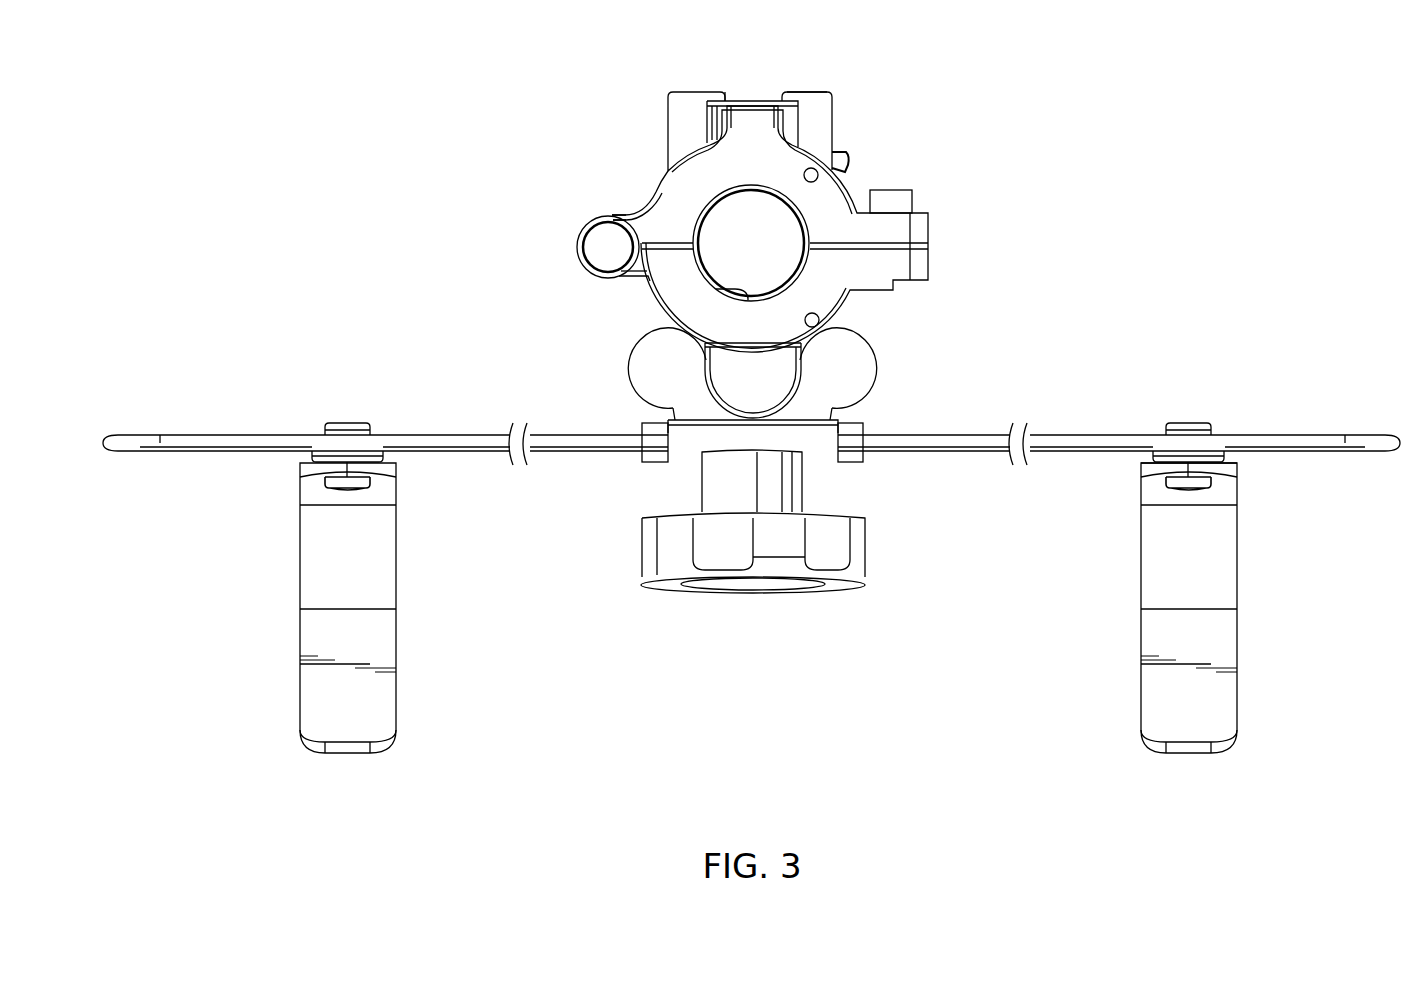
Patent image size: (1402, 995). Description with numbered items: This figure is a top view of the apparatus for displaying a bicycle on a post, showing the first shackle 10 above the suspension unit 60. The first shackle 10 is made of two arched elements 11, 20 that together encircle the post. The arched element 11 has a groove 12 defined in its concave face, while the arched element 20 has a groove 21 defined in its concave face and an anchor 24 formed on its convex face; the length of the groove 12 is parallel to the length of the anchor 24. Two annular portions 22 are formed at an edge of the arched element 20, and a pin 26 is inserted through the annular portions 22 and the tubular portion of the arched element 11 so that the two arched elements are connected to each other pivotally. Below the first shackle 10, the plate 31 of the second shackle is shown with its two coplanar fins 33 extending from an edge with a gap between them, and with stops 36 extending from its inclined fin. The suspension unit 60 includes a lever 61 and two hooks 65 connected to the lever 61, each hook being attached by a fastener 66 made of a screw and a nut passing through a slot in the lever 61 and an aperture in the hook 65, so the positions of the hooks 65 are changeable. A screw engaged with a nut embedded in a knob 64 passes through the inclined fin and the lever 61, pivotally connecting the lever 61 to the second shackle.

The first shackle 10 is at (870, 112).
The arched element 11 is at (873, 270).
The groove 12 is at (723, 289).
The arched element 20 is at (835, 208).
The groove 21 is at (733, 200).
The annular portions 22 is at (602, 215).
The anchor 24 is at (717, 120).
The pin 26 is at (598, 250).
The plate 31 is at (843, 375).
The coplanar fins 33 is at (817, 102).
The stops 36 is at (848, 435).
The suspension unit 60 is at (1050, 512).
The lever 61 is at (1122, 450).
The knob 64 is at (760, 582).
The hooks 65 is at (1158, 537).
The fastener 66 is at (1183, 423).